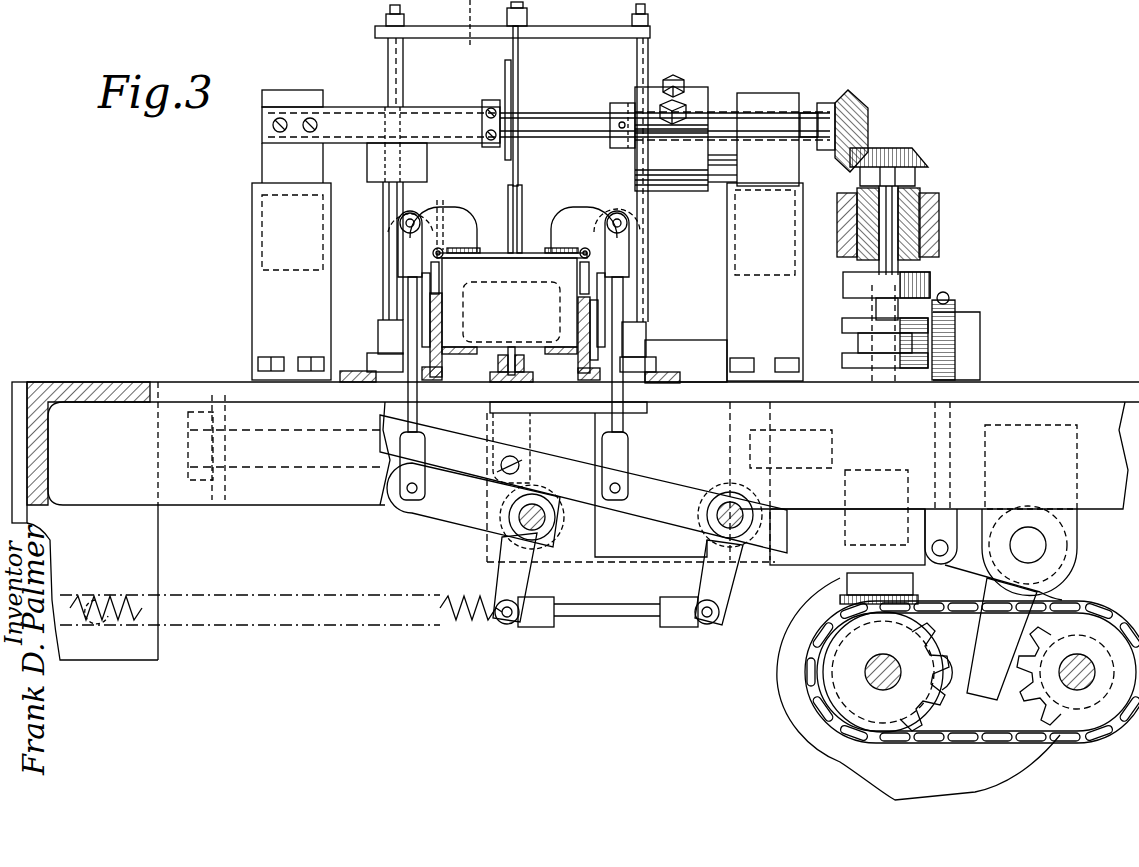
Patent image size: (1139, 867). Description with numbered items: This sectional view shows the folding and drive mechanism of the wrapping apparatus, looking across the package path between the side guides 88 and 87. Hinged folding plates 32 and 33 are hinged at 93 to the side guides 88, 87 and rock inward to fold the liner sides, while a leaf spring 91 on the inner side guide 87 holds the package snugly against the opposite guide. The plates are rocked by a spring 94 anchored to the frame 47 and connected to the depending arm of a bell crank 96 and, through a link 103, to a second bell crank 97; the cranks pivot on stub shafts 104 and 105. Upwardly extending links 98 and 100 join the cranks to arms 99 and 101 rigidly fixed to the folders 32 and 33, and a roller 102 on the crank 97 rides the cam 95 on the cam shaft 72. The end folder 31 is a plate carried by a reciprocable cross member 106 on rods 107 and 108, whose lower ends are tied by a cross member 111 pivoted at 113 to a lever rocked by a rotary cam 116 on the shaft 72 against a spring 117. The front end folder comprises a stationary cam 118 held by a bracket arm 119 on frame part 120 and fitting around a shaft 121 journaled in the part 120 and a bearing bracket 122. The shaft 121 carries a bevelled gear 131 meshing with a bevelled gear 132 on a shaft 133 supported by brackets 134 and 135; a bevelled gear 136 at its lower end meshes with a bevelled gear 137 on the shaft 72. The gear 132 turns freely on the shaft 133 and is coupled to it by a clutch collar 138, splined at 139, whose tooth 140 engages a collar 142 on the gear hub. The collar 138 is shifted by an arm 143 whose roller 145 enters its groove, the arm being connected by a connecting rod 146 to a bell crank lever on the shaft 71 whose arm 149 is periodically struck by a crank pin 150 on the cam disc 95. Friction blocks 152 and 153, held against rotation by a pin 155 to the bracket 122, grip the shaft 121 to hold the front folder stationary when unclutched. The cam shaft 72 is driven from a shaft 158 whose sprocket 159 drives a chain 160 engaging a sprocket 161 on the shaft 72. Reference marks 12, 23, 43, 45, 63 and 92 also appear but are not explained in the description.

The section line 12 is at (488, 12).
The pin 23 is at (522, 365).
The end folder 31 is at (520, 70).
The folding plate 32 is at (508, 245).
The folding plate 33 is at (522, 245).
The block 43 is at (680, 346).
The slide 45 is at (590, 548).
The frame 47 is at (160, 545).
The frame 63 is at (232, 505).
The shaft 71 is at (1048, 545).
The cam shaft 72 is at (888, 655).
The side guide 87 is at (578, 335).
The side guide 88 is at (445, 312).
The leaf spring 91 is at (440, 200).
The bracket 92 is at (592, 192).
The hinges 93 is at (444, 235).
The spring 94 is at (342, 592).
The cam 95 is at (777, 708).
The bell crank 96 is at (450, 510).
The bell crank 97 is at (665, 520).
The link 98 is at (408, 300).
The arm 99 is at (462, 218).
The link 100 is at (623, 305).
The arm 101 is at (572, 215).
The roller 102 is at (825, 512).
The link 103 is at (602, 614).
The stub shaft 104 is at (540, 550).
The stub shaft 105 is at (720, 510).
The cross member 106 is at (600, 30).
The rod 107 is at (403, 58).
The rod 108 is at (636, 52).
The cross member 111 is at (635, 410).
The pivot 113 is at (519, 460).
The rotary cam 116 is at (410, 500).
The spring 117 is at (950, 562).
The stationary cam 118 is at (500, 108).
The bracket arm 119 is at (372, 106).
The frame part 120 is at (262, 160).
The shaft 121 is at (572, 115).
The bearing bracket 122 is at (765, 100).
The bevelled gear 131 is at (853, 100).
The bevelled gear 132 is at (912, 165).
The shaft 133 is at (922, 204).
The bracket 134 is at (925, 232).
The bracket 135 is at (840, 480).
The bevelled gear 136 is at (847, 600).
The bevelled gear 137 is at (840, 614).
The clutch collar 138 is at (850, 332).
The spline 139 is at (876, 310).
The tooth 140 is at (855, 291).
The collar 142 is at (930, 280).
The arm 143 is at (955, 332).
The stud or roller 145 is at (960, 345).
The connecting rod 146 is at (950, 412).
The arm 149 is at (1052, 596).
The crank pin 150 is at (958, 680).
The friction block 152 is at (655, 88).
The friction block 153 is at (672, 190).
The pin 155 is at (720, 188).
The shaft 158 is at (1082, 690).
The sprocket 159 is at (1080, 735).
The chain 160 is at (1030, 745).
The sprocket 161 is at (915, 732).